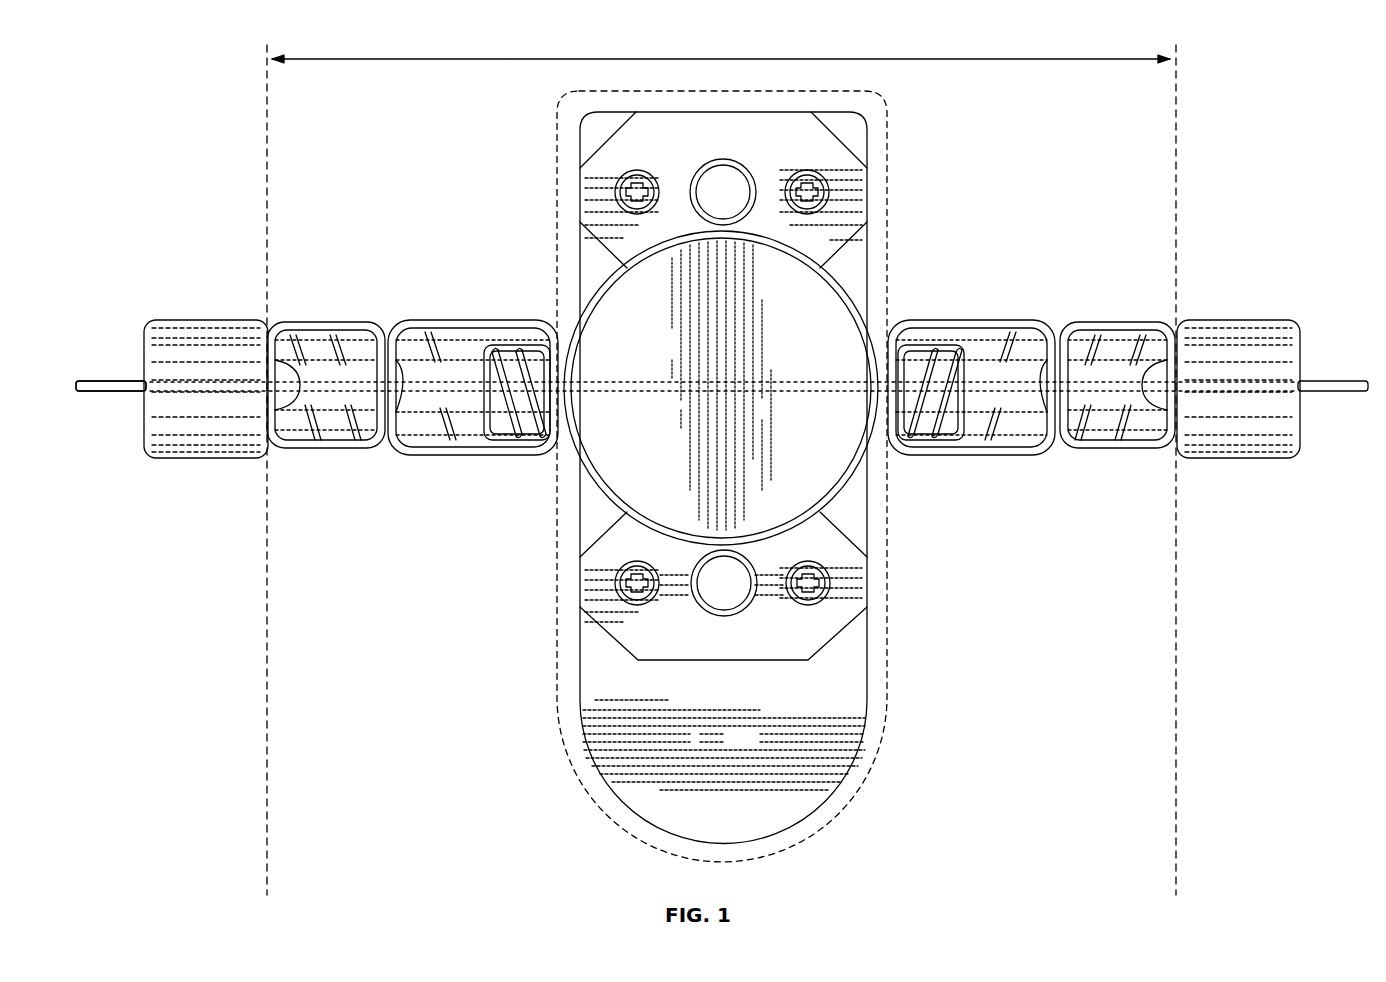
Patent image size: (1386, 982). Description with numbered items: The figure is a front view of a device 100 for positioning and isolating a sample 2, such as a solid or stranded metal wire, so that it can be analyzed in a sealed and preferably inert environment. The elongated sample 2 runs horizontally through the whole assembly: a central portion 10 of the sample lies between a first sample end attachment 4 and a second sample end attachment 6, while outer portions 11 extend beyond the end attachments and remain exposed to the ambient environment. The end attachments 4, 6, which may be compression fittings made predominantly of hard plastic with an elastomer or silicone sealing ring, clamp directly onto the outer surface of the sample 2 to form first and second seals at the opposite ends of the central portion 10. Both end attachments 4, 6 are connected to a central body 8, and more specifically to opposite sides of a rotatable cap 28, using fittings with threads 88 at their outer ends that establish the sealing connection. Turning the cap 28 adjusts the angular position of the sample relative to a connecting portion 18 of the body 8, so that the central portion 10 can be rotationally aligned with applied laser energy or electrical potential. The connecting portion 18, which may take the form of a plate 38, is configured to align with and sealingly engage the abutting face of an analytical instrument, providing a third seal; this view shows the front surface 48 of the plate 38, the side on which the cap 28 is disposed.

The device 100 is at (1232, 160).
The central portion 10 is at (758, 56).
The central body 8 is at (887, 157).
The rotatable cap 28 is at (866, 462).
The connecting portion 18 is at (580, 592).
The plate 38 is at (845, 710).
The front surface 48 is at (726, 749).
The sample 2 is at (116, 380).
The outer portions 11 is at (112, 393).
The first sample end attachment 4 is at (180, 320).
The second sample end attachment 6 is at (1258, 320).
The threads 88 is at (492, 345).